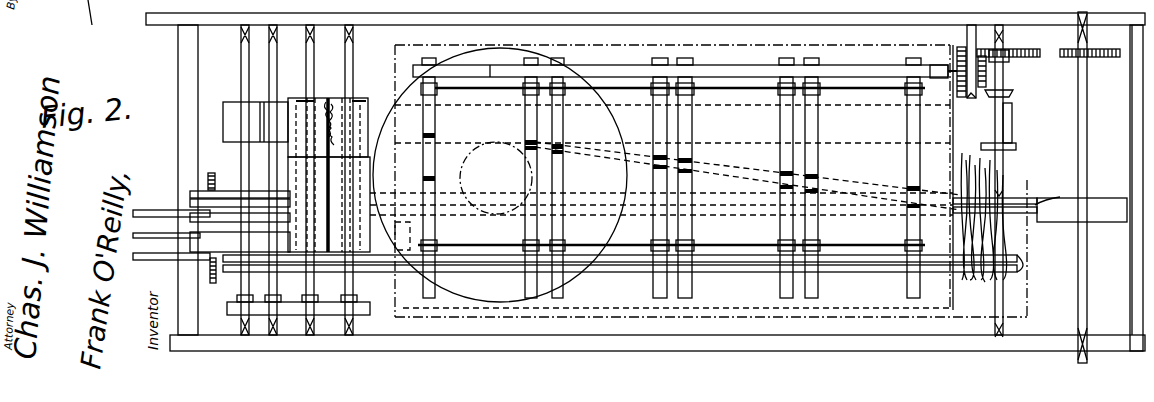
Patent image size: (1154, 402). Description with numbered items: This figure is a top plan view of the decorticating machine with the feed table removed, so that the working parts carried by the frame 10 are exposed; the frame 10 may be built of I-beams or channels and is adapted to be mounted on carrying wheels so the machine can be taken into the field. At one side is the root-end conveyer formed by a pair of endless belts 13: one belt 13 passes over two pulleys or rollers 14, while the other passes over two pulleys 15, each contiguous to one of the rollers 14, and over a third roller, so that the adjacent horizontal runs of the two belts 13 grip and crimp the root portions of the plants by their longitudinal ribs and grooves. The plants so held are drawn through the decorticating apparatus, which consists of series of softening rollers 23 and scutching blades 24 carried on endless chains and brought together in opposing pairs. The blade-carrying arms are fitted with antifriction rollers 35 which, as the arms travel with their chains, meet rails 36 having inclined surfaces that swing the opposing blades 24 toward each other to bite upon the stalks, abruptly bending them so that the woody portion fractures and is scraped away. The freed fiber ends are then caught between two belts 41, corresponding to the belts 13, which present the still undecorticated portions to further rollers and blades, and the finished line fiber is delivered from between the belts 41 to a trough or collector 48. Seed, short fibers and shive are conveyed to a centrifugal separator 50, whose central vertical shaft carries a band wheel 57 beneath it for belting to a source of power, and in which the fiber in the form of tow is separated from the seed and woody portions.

The frame 10 is at (1130, 110).
The endless belts 13 is at (192, 200).
The pulleys or rollers 14 is at (353, 180).
The pulleys 15 is at (300, 173).
The softening rollers 23 is at (873, 75).
The scutching blades 24 is at (757, 93).
The antifriction rollers 35 is at (683, 88).
The rails 36 is at (680, 287).
The belts 41 is at (1093, 168).
The trough or collector 48 is at (155, 258).
The centrifugal separator 50 is at (483, 299).
The band wheel 57 is at (496, 178).